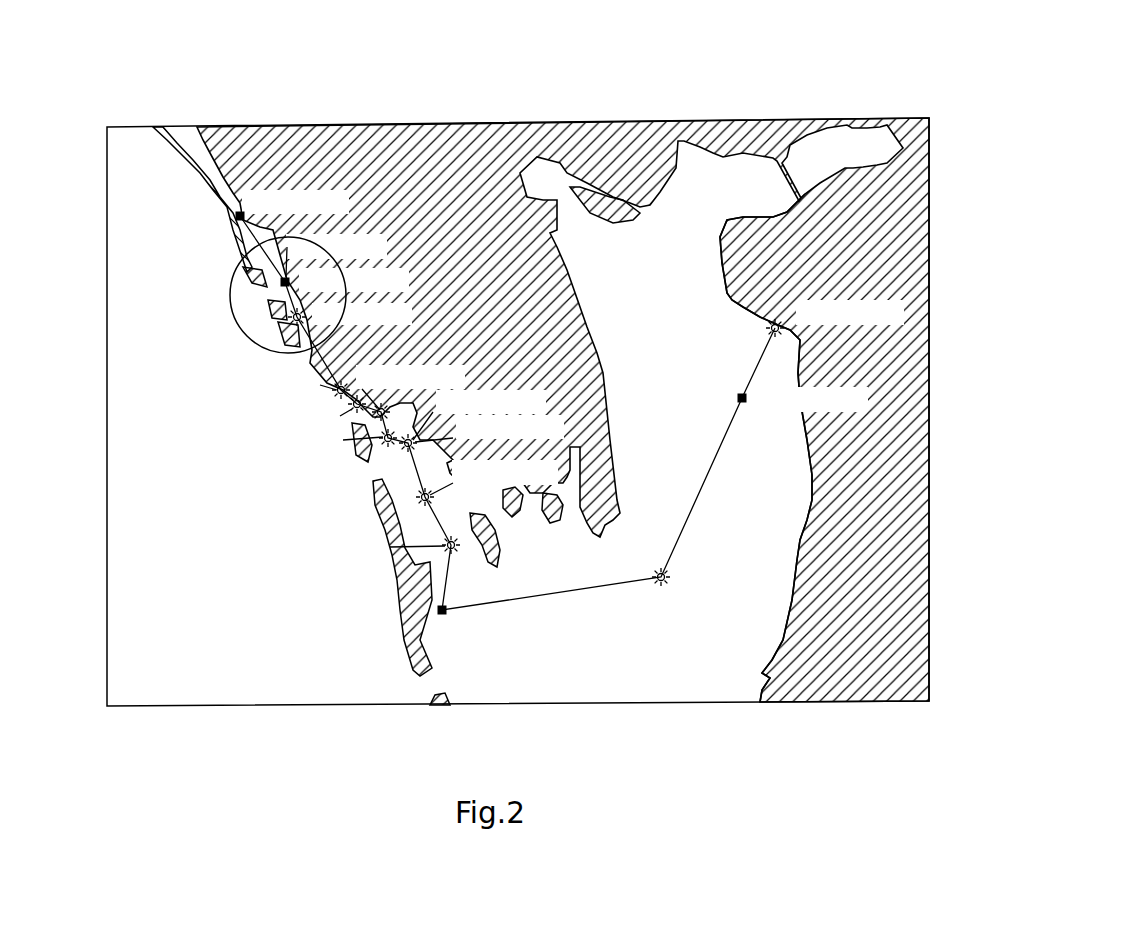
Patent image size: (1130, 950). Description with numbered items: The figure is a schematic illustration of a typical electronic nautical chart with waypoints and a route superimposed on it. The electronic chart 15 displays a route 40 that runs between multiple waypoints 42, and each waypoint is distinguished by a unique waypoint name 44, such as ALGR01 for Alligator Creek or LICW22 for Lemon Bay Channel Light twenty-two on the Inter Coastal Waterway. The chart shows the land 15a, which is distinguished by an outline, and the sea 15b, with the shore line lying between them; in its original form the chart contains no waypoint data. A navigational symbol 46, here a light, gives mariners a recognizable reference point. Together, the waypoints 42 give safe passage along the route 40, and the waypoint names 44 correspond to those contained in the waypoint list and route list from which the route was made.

The electronic chart 15 is at (178, 237).
The land 15a is at (457, 170).
The sea 15b is at (704, 163).
The route 40 is at (710, 478).
The waypoints 42 is at (818, 318).
The waypoint names 44 is at (695, 612).
The navigational symbol (light) 46 is at (217, 307).